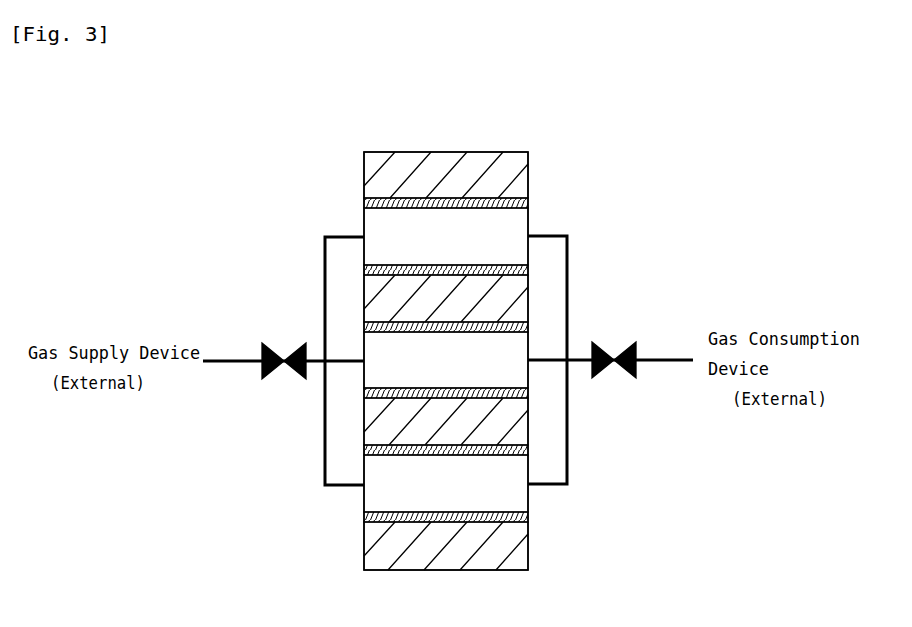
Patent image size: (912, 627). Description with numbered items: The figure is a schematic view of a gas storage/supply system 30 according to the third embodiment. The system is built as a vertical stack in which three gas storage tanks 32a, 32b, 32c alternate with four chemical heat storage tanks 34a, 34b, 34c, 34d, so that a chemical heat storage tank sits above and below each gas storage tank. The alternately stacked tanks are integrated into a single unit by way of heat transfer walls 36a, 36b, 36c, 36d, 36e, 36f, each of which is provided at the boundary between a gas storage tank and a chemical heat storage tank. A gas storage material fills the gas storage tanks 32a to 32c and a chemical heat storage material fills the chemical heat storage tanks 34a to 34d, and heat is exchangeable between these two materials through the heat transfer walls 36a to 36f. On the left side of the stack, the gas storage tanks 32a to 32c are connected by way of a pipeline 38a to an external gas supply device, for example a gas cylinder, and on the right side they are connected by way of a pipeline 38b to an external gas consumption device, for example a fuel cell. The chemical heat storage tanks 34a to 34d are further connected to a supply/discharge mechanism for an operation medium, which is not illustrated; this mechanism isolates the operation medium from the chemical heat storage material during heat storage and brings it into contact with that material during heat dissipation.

The gas storage/supply system 30 is at (769, 124).
The gas storage tank 32a is at (364, 224).
The gas storage tank 32b is at (364, 343).
The gas storage tank 32c is at (364, 502).
The chemical heat storage tank 34a is at (364, 173).
The chemical heat storage tank 34b is at (364, 283).
The chemical heat storage tank 34c is at (364, 430).
The chemical heat storage tank 34d is at (364, 543).
The heat transfer wall 36a is at (528, 202).
The heat transfer wall 36b is at (528, 269).
The heat transfer wall 36c is at (528, 331).
The heat transfer wall 36d is at (528, 392).
The heat transfer wall 36e is at (528, 450).
The heat transfer wall 36f is at (528, 518).
The pipeline 38a is at (245, 363).
The pipeline 38b is at (658, 357).